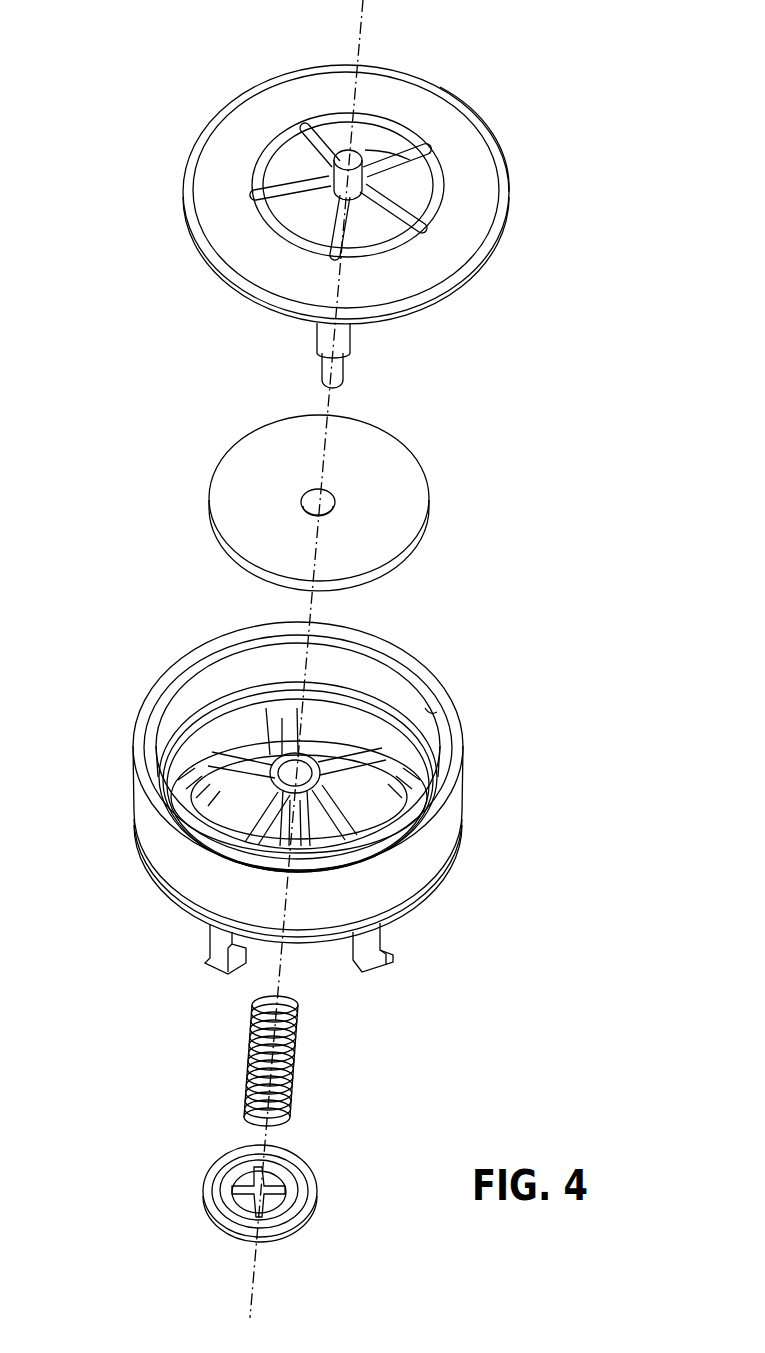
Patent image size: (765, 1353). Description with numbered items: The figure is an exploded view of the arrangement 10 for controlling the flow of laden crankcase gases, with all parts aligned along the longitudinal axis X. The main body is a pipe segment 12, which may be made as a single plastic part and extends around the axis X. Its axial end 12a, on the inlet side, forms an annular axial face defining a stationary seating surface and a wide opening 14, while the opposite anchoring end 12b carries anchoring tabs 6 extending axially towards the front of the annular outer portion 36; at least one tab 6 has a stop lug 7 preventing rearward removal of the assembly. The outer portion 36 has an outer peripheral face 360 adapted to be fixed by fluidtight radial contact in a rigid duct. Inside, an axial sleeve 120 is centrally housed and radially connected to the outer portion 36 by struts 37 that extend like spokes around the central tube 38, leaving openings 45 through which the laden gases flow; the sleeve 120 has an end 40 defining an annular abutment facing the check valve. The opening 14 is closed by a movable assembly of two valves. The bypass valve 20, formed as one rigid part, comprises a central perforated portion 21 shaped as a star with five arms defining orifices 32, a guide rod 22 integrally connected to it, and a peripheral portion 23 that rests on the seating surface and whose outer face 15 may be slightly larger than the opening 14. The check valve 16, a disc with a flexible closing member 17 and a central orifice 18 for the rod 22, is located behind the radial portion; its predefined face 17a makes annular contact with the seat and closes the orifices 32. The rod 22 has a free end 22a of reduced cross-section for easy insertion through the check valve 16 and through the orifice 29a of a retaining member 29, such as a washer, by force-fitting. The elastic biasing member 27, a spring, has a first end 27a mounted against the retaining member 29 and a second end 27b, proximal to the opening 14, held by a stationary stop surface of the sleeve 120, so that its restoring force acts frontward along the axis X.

The longitudinal axis X is at (353, 33).
The arrangement 10 is at (478, 1008).
The pipe segment 12 is at (290, 802).
The axial end 12a is at (450, 748).
The anchoring end 12b is at (217, 967).
The opening 14 is at (432, 712).
The outer face 15 is at (218, 145).
The check valve 16 is at (308, 503).
The closing member 17 is at (383, 453).
The predefined face 17a is at (365, 533).
The central orifice 18 is at (330, 502).
The bypass valve 20 is at (326, 228).
The central perforated portion 21 is at (400, 172).
The guide rod 22 is at (345, 333).
The free end 22a is at (318, 367).
The peripheral portion 23 is at (485, 248).
The elastic biasing member 27 is at (262, 1073).
The first end 27a is at (280, 1123).
The second end 27b is at (298, 1012).
The retaining member 29 is at (241, 1208).
The orifice 29a is at (280, 1197).
The orifices 32 is at (370, 150).
The annular outer portion 36 is at (130, 808).
The outer peripheral face 360 is at (135, 790).
The struts 37 is at (368, 802).
The central tube 38 is at (302, 773).
The end 40 is at (227, 760).
The openings 45 is at (222, 752).
The axial sleeve 120 is at (297, 828).
The anchoring tabs 6 is at (378, 933).
The stop lug 7 is at (393, 960).